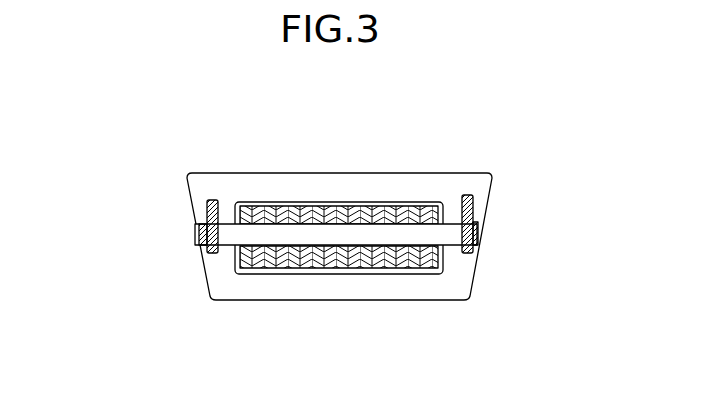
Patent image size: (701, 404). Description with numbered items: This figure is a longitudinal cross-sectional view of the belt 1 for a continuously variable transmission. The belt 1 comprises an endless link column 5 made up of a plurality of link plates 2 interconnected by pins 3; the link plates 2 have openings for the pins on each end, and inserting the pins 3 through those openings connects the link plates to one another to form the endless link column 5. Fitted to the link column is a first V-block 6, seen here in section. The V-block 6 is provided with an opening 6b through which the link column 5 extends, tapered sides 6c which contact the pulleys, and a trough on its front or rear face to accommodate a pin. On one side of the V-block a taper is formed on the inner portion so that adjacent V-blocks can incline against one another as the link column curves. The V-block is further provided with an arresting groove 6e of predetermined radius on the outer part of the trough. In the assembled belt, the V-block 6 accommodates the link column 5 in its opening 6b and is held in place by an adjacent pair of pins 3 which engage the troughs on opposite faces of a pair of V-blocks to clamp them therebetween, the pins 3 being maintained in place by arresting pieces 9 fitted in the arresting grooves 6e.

The belt 1 is at (198, 157).
The link plates 2 is at (423, 203).
The pins 3 is at (210, 293).
The endless link column 5 is at (403, 274).
The first V-block 6 is at (258, 183).
The opening 6b is at (310, 262).
The tapered sides 6c is at (200, 252).
The arresting groove 6e is at (200, 217).
The arresting pieces 9 is at (205, 250).